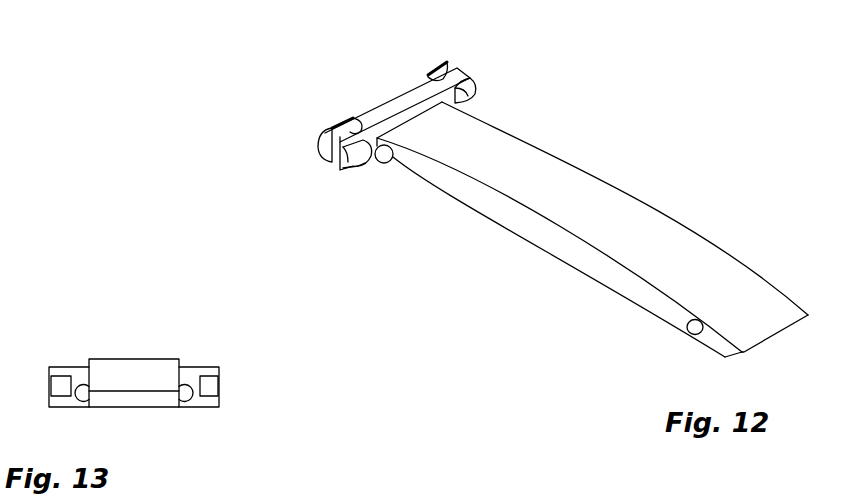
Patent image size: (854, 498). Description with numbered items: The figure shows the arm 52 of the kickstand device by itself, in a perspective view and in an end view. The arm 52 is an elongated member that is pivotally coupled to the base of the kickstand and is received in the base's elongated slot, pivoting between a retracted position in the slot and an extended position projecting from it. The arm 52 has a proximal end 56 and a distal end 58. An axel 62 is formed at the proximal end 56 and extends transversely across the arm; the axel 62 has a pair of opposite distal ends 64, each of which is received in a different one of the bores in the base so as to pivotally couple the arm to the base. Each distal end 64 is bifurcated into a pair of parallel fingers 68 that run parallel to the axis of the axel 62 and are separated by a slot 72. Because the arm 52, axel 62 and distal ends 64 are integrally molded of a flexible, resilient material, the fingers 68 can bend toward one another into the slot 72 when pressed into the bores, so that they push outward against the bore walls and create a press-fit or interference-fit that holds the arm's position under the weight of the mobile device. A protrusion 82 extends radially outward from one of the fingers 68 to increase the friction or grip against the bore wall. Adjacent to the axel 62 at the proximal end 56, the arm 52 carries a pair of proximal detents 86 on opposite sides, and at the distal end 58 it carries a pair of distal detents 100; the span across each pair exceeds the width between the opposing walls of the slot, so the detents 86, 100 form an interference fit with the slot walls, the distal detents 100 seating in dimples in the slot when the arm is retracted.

In FIG. 12, the arm 52 is at (582, 177).
In FIG. 13, the arm 52 is at (132, 358).
In FIG. 12, the proximal end 56 is at (443, 125).
In FIG. 12, the distal end 58 is at (763, 309).
In FIG. 12, the axel 62 is at (401, 100).
In FIG. 12, the distal ends of the axel 64 is at (434, 73).
In FIG. 13, the distal ends of the axel 64 is at (55, 365).
In FIG. 12, the fingers 68 is at (318, 147).
In FIG. 12, the slot 72 is at (330, 155).
In FIG. 12, the protrusion 82 is at (358, 165).
In FIG. 12, the proximal detents 86 is at (393, 158).
In FIG. 12, the distal detents 100 is at (687, 326).
In FIG. 13, the distal detents 100 is at (80, 400).